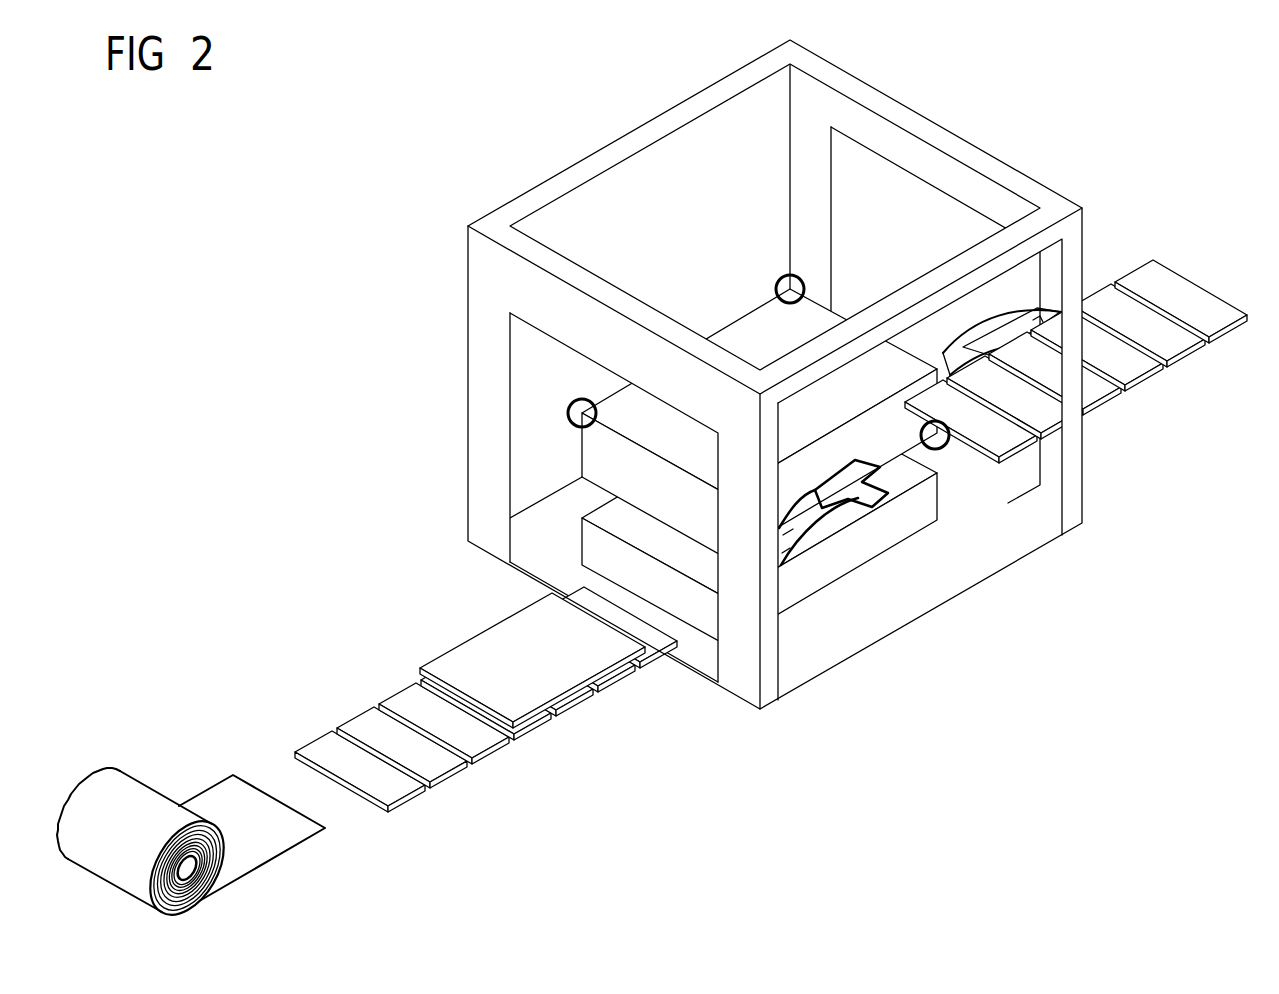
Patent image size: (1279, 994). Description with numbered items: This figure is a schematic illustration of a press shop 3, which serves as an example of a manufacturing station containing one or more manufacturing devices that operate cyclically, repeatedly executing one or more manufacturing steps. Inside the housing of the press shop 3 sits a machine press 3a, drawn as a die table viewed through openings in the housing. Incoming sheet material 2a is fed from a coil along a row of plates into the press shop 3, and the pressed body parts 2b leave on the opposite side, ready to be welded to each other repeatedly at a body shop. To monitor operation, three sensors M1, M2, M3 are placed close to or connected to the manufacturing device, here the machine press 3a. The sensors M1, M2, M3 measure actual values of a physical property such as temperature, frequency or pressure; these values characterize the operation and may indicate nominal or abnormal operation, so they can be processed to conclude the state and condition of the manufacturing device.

The press shop 3 is at (592, 140).
The machine press 3a is at (689, 330).
The incoming sheet metal blank 2a is at (460, 658).
The body parts 2b is at (1106, 343).
The sensor M1 is at (567, 413).
The sensor M2 is at (776, 291).
The sensor M3 is at (947, 447).